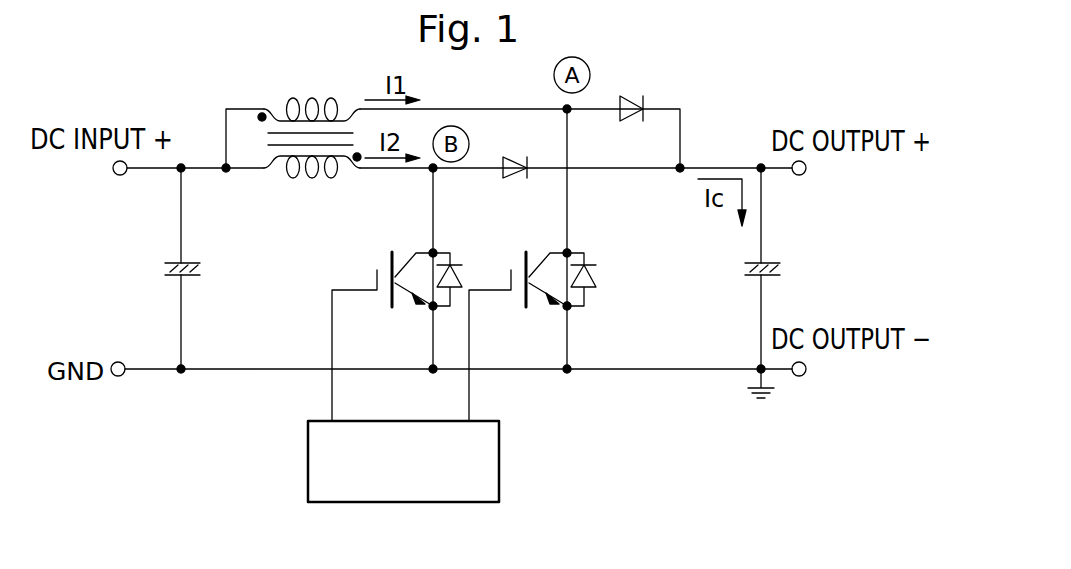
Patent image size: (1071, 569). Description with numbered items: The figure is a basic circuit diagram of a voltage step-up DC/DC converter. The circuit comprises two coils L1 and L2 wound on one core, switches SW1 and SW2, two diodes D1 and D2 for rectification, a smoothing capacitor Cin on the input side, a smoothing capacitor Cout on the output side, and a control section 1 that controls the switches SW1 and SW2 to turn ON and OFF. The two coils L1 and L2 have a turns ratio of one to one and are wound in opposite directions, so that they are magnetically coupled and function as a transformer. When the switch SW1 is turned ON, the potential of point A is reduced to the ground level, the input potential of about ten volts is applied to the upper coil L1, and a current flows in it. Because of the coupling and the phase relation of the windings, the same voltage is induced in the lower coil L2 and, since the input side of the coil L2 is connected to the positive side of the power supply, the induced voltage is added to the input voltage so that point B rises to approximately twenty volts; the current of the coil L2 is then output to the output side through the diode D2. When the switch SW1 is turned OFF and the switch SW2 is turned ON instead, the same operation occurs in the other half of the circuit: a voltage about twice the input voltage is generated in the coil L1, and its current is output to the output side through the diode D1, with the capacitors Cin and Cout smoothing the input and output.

The control section 1 is at (499, 461).
The coil L1 is at (309, 93).
The coil L2 is at (312, 183).
The diode D1 is at (629, 94).
The diode D2 is at (516, 152).
The switch SW1 is at (532, 322).
The switch SW2 is at (397, 322).
The smoothing capacitor Cin is at (157, 263).
The smoothing capacitor Cout is at (728, 263).